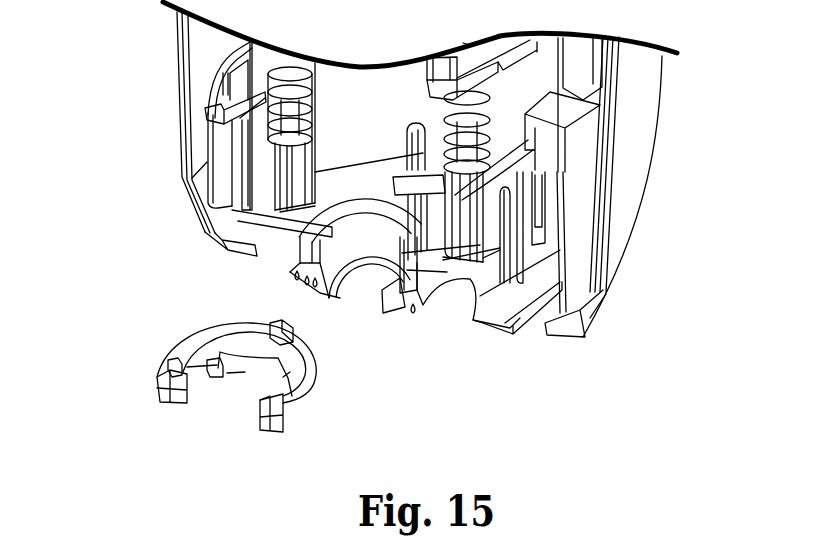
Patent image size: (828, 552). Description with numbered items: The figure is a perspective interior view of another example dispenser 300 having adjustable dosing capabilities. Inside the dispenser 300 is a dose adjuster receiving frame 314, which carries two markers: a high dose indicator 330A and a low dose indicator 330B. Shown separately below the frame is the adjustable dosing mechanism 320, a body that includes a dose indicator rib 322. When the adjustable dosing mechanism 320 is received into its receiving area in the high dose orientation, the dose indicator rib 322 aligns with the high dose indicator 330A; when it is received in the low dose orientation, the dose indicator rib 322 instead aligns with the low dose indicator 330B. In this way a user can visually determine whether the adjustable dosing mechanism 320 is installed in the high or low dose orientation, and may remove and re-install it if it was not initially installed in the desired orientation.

The dispenser 300 is at (652, 104).
The dose adjuster receiving frame 314 is at (268, 225).
The adjustable dosing mechanism 320 is at (293, 408).
The dose indicator rib 322 is at (168, 360).
The high dose indicator 330A is at (270, 268).
The low dose indicator 330B is at (426, 311).